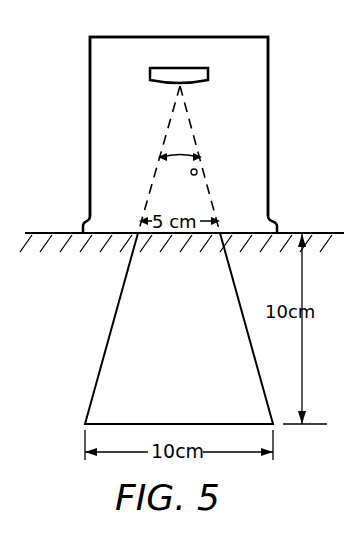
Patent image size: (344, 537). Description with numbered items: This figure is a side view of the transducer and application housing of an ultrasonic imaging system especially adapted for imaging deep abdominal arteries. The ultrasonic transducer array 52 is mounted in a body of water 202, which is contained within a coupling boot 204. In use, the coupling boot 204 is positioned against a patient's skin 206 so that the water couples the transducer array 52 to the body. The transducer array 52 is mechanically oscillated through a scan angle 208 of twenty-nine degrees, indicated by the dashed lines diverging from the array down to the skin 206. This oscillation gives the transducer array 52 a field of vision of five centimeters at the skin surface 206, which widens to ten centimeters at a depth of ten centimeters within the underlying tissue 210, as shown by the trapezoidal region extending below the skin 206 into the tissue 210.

The ultrasonic transducer array 52 is at (138, 80).
The body of water 202 is at (138, 128).
The coupling boot 204 is at (90, 123).
The patient's skin 206 is at (58, 233).
The scan angle 208 is at (181, 158).
The tissue 210 is at (70, 322).